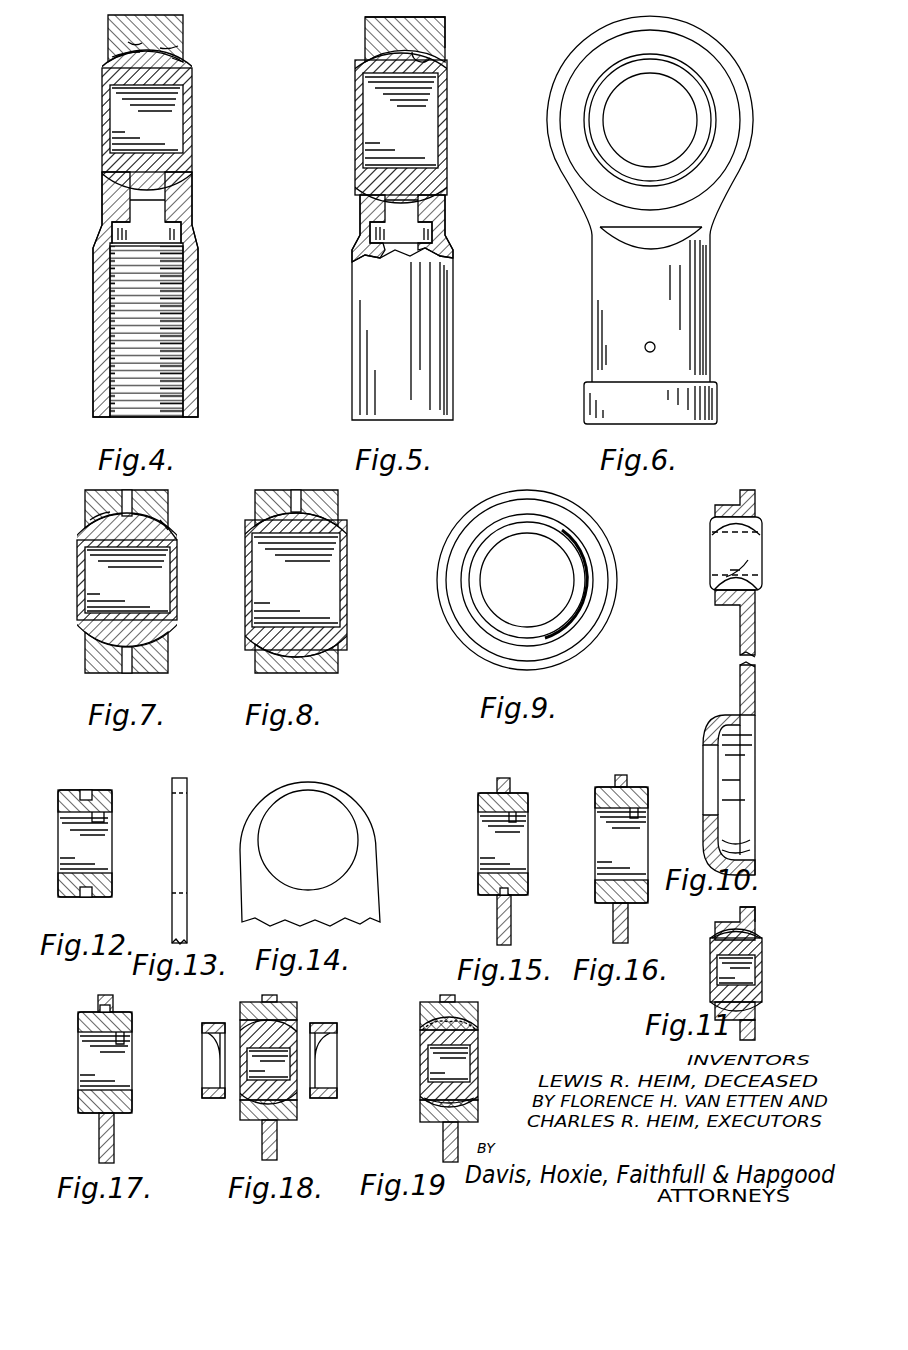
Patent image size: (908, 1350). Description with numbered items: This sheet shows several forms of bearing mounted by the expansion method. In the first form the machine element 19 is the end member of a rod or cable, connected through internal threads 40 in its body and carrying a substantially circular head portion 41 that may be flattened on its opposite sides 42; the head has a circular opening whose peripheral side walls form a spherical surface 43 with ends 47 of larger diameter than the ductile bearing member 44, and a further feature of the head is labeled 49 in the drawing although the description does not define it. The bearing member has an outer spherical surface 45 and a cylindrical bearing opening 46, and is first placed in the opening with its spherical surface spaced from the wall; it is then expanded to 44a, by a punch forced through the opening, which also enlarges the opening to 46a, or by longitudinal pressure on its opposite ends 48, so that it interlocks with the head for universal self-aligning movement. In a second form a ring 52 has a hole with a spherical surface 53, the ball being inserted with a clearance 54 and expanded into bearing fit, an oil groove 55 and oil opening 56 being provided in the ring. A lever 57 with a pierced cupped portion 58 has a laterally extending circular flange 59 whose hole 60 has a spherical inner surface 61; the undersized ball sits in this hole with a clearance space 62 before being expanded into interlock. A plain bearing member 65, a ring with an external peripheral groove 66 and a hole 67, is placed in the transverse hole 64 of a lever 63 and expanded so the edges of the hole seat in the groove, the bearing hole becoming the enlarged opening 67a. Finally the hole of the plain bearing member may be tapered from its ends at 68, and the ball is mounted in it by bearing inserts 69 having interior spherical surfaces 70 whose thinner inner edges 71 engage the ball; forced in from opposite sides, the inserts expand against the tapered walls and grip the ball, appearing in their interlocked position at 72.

In FIG. 4, the machine element 19 is at (197, 278).
In FIG. 5, the machine element 19 is at (447, 250).
In FIG. 6, the machine element 19 is at (704, 260).
In FIG. 4, the internal threads 40 is at (172, 373).
In FIG. 4, the head portion 41 is at (173, 32).
In FIG. 5, the head portion 41 is at (377, 35).
In FIG. 6, the head portion 41 is at (746, 84).
In FIG. 5, the flattened sides 42 is at (440, 42).
In FIG. 4, the spherical surface 43 is at (178, 46).
In FIG. 5, the spherical surface 43 is at (430, 58).
In FIG. 4, the bearing member 44 is at (177, 167).
In FIG. 5, the bearing member 44 is at (363, 62).
In FIG. 7, the bearing member 44 is at (163, 627).
In FIG. 11, the bearing member 44 is at (757, 995).
In FIG. 18, the bearing member 44 is at (297, 1030).
In FIG. 19, the bearing member 44 is at (478, 1042).
In FIG. 5, the expanded bearing member 44a is at (435, 190).
In FIG. 6, the expanded bearing member 44a is at (714, 139).
In FIG. 8, the expanded bearing member 44a is at (340, 528).
In FIG. 9, the expanded bearing member 44a is at (577, 550).
In FIG. 10, the expanded bearing member 44a is at (763, 527).
In FIG. 4, the outer spherical surface 45 is at (112, 57).
In FIG. 7, the outer spherical surface 45 is at (170, 527).
In FIG. 4, the bearing opening 46 is at (167, 150).
In FIG. 7, the bearing opening 46 is at (155, 613).
In FIG. 11, the bearing opening 46 is at (745, 987).
In FIG. 5, the expanded bearing opening 46a is at (420, 168).
In FIG. 6, the expanded bearing opening 46a is at (663, 79).
In FIG. 8, the expanded bearing opening 46a is at (317, 625).
In FIG. 9, the expanded bearing opening 46a is at (520, 537).
In FIG. 4, the ends of the opening 47 is at (183, 62).
In FIG. 4, the opposite ends of the bearing member 48 is at (102, 77).
In FIG. 4, the flange 49 is at (128, 42).
In FIG. 7, the ring 52 is at (87, 497).
In FIG. 8, the ring 52 is at (337, 502).
In FIG. 9, the ring 52 is at (463, 643).
In FIG. 7, the spherical surface of the hole 53 is at (168, 520).
In FIG. 8, the spherical surface of the hole 53 is at (312, 508).
In FIG. 7, the clearance 54 is at (98, 513).
In FIG. 7, the oil groove 55 is at (128, 663).
In FIG. 7, the oil opening 56 is at (130, 492).
In FIG. 10, the lever 57 is at (752, 670).
In FIG. 11, the lever 57 is at (752, 1035).
In FIG. 10, the pierced cupped portion 58 is at (732, 803).
In FIG. 10, the circular flange 59 is at (723, 505).
In FIG. 11, the circular flange 59 is at (730, 922).
In FIG. 11, the hole 60 is at (755, 910).
In FIG. 10, the spherical inner surface 61 is at (745, 518).
In FIG. 11, the spherical inner surface 61 is at (742, 937).
In FIG. 11, the clearance space 62 is at (755, 1018).
In FIG. 13, the lever 63 is at (180, 848).
In FIG. 14, the lever 63 is at (367, 887).
In FIG. 15, the lever 63 is at (510, 925).
In FIG. 16, the lever 63 is at (623, 783).
In FIG. 17, the lever 63 is at (100, 1152).
In FIG. 18, the lever 63 is at (263, 1155).
In FIG. 19, the lever 63 is at (443, 1150).
In FIG. 13, the transverse hole 64 is at (187, 800).
In FIG. 14, the transverse hole 64 is at (323, 800).
In FIG. 15, the transverse hole 64 is at (497, 898).
In FIG. 17, the transverse hole 64 is at (105, 995).
In FIG. 12, the plain bearing member 65 is at (102, 793).
In FIG. 15, the plain bearing member 65 is at (522, 793).
In FIG. 16, the plain bearing member 65 is at (600, 797).
In FIG. 17, the plain bearing member 65 is at (128, 1020).
In FIG. 19, the plain bearing member 65 is at (475, 1000).
In FIG. 12, the external peripheral groove 66 is at (85, 790).
In FIG. 15, the external peripheral groove 66 is at (480, 800).
In FIG. 16, the external peripheral groove 66 is at (627, 785).
In FIG. 17, the external peripheral groove 66 is at (90, 1023).
In FIG. 18, the external peripheral groove 66 is at (273, 1123).
In FIG. 19, the external peripheral groove 66 is at (475, 1108).
In FIG. 12, the hole 67 is at (104, 820).
In FIG. 15, the hole 67 is at (512, 815).
In FIG. 17, the hole 67 is at (123, 1042).
In FIG. 16, the enlarged plain bearing opening 67a is at (635, 812).
In FIG. 18, the tapered surfaces 68 is at (260, 1005).
In FIG. 18, the bearing inserts 69 is at (207, 1032).
In FIG. 18, the interior spherical surfaces 70 is at (207, 1035).
In FIG. 18, the thinner inner edges 71 is at (233, 1093).
In FIG. 19, the expanded inserts 72 is at (422, 1018).